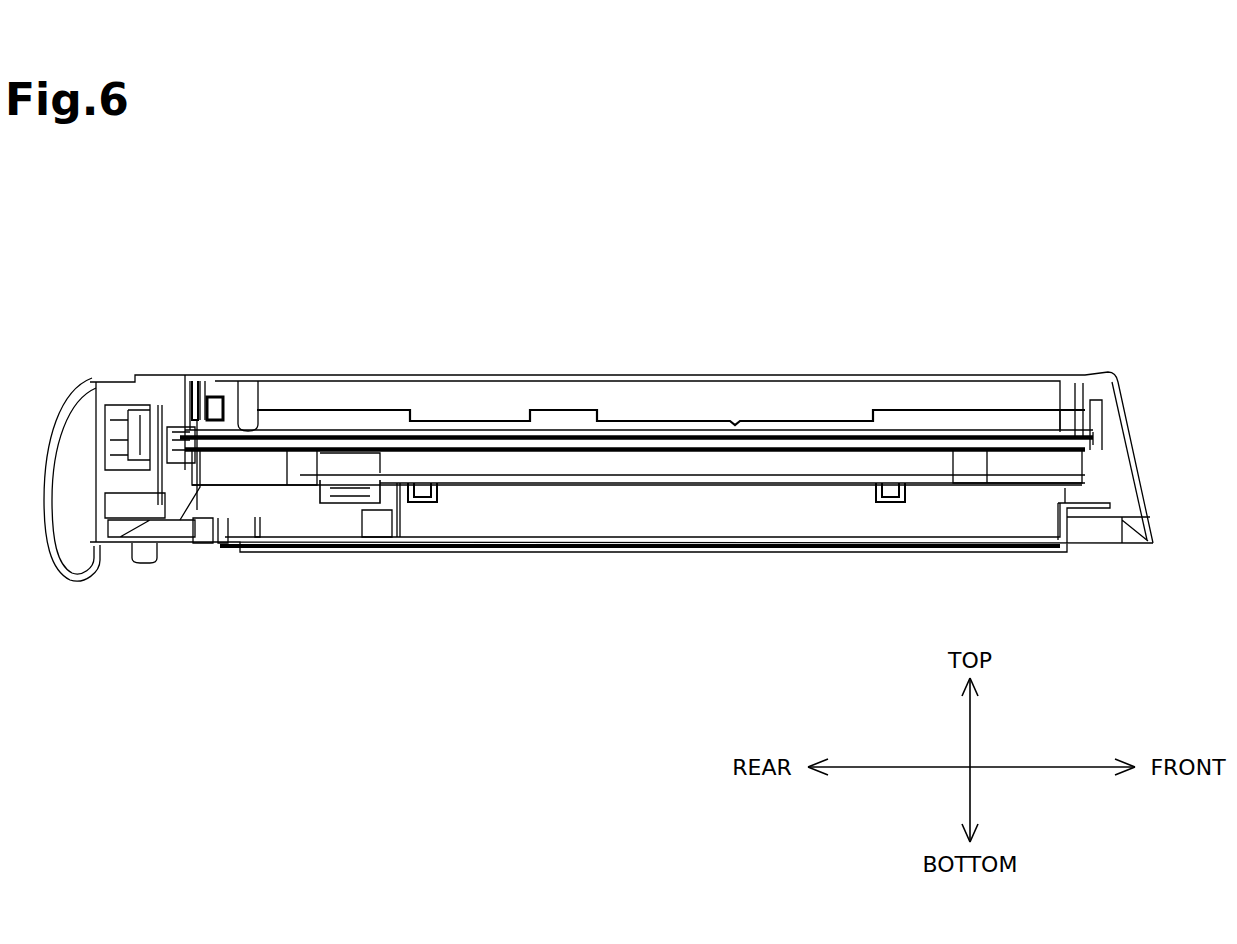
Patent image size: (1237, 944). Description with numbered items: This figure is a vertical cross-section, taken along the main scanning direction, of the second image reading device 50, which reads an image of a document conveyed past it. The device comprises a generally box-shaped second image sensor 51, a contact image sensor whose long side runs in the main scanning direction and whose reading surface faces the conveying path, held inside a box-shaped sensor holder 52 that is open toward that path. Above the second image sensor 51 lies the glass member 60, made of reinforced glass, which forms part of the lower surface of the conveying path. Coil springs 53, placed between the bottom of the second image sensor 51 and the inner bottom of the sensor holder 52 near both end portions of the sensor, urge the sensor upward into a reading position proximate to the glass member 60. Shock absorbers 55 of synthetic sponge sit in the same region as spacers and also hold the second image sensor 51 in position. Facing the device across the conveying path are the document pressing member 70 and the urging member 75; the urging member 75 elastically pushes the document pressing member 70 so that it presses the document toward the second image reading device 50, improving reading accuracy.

The second image reading device 50 is at (1055, 467).
The second image sensor 51 is at (822, 462).
The sensor holder 52 is at (712, 488).
The coil springs 53 is at (443, 493).
The shock absorbers 55 is at (492, 478).
The glass member 60 is at (300, 378).
The document pressing member 70 is at (561, 378).
The urging member 75 is at (636, 376).